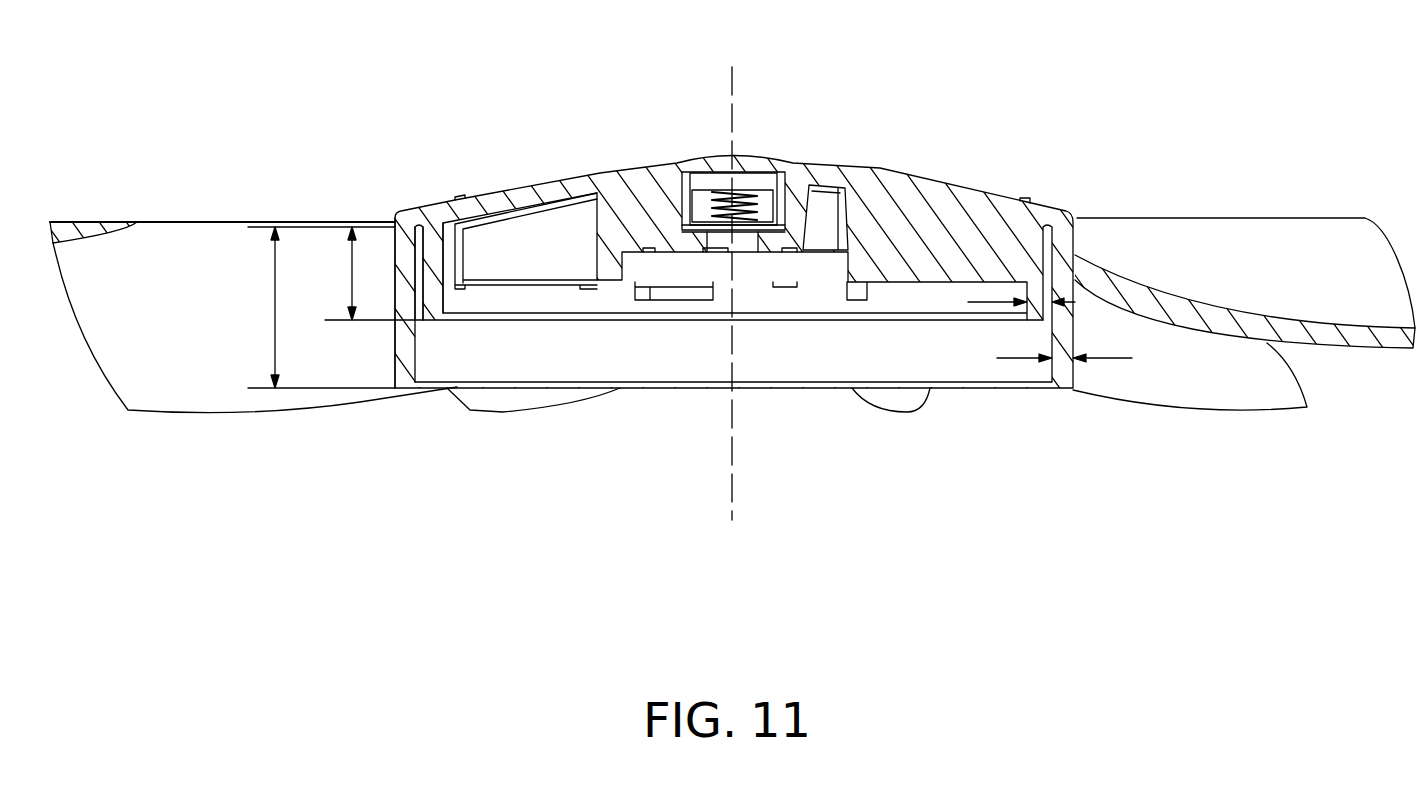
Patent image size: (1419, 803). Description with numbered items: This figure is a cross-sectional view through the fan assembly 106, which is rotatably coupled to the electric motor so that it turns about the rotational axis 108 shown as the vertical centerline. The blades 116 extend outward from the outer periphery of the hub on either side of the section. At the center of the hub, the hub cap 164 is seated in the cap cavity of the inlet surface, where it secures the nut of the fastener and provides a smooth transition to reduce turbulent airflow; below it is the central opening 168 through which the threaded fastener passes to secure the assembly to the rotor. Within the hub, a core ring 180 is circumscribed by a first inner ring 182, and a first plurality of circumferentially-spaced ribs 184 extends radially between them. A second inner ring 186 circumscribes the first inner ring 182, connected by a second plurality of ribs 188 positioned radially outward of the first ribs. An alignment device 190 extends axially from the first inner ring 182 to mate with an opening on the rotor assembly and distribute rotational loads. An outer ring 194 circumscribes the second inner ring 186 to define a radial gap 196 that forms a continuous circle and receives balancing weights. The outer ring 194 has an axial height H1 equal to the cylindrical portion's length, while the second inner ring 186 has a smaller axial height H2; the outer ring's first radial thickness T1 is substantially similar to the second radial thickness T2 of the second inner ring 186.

The fan assembly 106 is at (350, 107).
The rotational axis 108 is at (732, 82).
The blades 116 is at (1237, 232).
The hub cap 164 is at (757, 160).
The central opening 168 is at (745, 243).
The core ring 180 is at (798, 188).
The first inner ring 182 is at (605, 248).
The first plurality of circumferentially-spaced ribs 184 is at (648, 205).
The second inner ring 186 is at (435, 302).
The second plurality of circumferentially-spaced ribs 188 is at (515, 247).
The alignment device 190 is at (672, 292).
The outer ring 194 is at (415, 383).
The radial gap 196 is at (425, 345).
The axial height H1 is at (275, 315).
The axial height H2 is at (352, 278).
The first radial thickness T1 is at (1010, 360).
The second radial thickness T2 is at (980, 303).